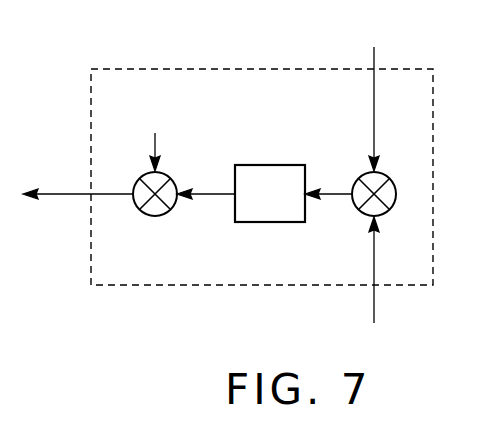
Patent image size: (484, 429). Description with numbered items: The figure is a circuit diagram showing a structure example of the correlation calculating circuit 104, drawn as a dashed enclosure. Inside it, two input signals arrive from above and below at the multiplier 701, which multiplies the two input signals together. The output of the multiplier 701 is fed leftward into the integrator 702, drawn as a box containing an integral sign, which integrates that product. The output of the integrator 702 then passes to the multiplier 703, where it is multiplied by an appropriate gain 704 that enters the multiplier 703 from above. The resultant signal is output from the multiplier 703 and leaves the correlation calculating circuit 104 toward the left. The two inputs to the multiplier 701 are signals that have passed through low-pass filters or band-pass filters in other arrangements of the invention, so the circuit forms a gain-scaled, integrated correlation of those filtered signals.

The correlation calculating circuit 104 is at (292, 69).
The multiplier 701 is at (389, 178).
The integrator 702 is at (270, 165).
The multiplier 703 is at (178, 188).
The gain Gstep 704 is at (158, 103).